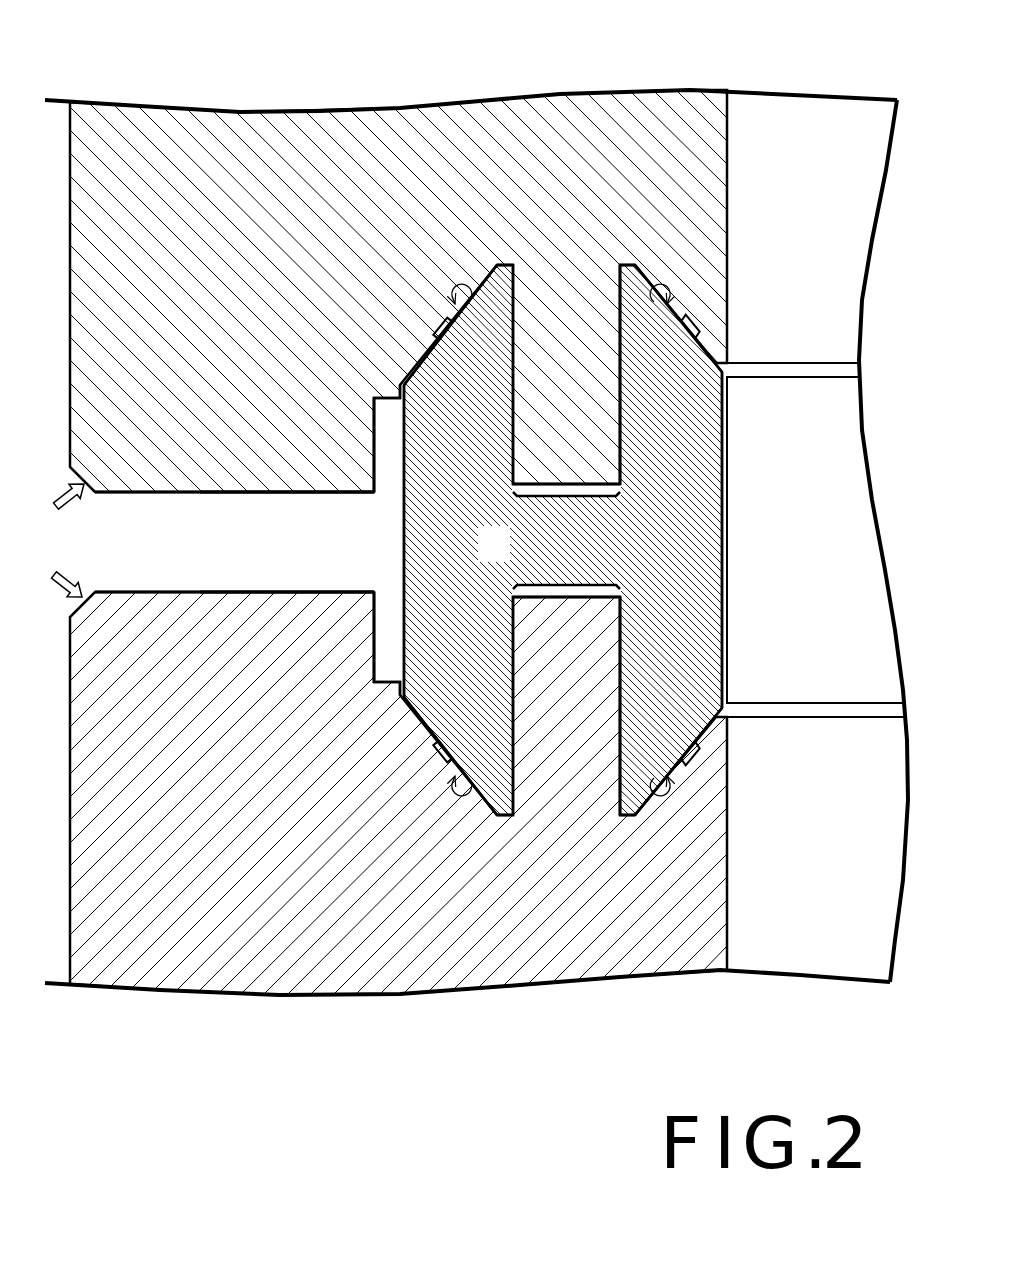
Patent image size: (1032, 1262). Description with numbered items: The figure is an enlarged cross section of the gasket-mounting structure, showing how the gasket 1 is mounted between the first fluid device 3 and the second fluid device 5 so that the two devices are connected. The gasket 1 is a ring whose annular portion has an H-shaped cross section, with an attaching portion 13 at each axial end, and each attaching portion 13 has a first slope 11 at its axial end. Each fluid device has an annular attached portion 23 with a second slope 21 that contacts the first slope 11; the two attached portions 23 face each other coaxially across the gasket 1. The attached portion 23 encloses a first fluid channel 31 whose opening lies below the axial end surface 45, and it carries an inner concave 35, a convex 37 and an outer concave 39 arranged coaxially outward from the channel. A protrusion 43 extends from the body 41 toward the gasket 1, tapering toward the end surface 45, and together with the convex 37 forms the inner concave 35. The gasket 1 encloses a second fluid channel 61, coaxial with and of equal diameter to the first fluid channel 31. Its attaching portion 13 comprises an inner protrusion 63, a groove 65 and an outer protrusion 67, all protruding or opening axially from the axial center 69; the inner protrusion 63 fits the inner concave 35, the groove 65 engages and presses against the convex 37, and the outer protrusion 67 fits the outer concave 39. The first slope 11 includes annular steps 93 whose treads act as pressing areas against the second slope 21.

The gasket 1 is at (482, 560).
The first fluid device 3 is at (57, 577).
The second fluid device 5 is at (58, 507).
The first slope 11 is at (698, 345).
The attaching portion 13 is at (515, 262).
The second slope 21 is at (660, 290).
The attached portion 23 is at (155, 495).
The first fluid channel 31 is at (828, 158).
The inner concave 35 is at (632, 262).
The convex 37 is at (624, 392).
The outer concave 39 is at (500, 262).
The body 41 is at (725, 150).
The protrusion 43 is at (723, 330).
The axial end surface 45 is at (246, 495).
The second fluid channel 61 is at (823, 618).
The inner protrusion 63 is at (730, 392).
The groove 65 is at (624, 494).
The outer protrusion 67 is at (400, 445).
The axial center 69 is at (605, 543).
The annular steps 93 is at (466, 292).